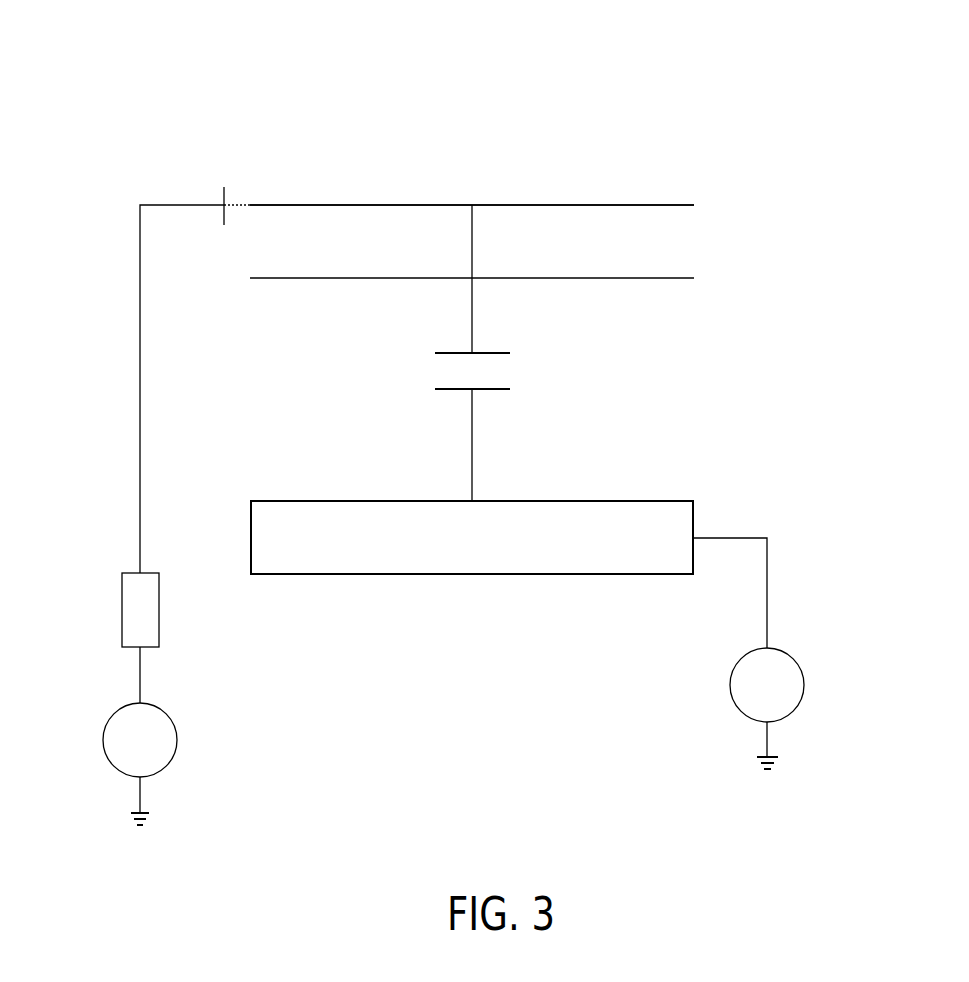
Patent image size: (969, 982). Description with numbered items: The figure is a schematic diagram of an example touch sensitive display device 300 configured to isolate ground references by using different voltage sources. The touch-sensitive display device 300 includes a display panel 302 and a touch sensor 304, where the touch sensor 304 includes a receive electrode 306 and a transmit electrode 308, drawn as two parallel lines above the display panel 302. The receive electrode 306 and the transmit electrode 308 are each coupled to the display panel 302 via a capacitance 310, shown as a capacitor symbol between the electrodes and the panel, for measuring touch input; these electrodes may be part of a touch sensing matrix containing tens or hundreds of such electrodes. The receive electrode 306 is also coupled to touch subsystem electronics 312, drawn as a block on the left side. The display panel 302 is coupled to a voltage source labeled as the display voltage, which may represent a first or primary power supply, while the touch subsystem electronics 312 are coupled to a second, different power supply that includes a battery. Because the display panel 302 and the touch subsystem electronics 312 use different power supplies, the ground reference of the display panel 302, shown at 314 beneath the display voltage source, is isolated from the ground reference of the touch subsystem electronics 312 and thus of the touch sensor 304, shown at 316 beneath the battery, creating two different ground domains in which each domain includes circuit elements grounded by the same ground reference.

The touch sensitive display device 300 is at (108, 68).
The display panel 302 is at (472, 537).
The touch sensor 304 is at (668, 180).
The receive electrode 306 is at (313, 205).
The transmit electrode 308 is at (305, 278).
The capacitance 310 is at (503, 347).
The touch subsystem electronics 312 is at (132, 572).
The ground reference of the display panel 314 is at (778, 748).
The ground reference of the touch subsystem electronics 316 is at (153, 808).